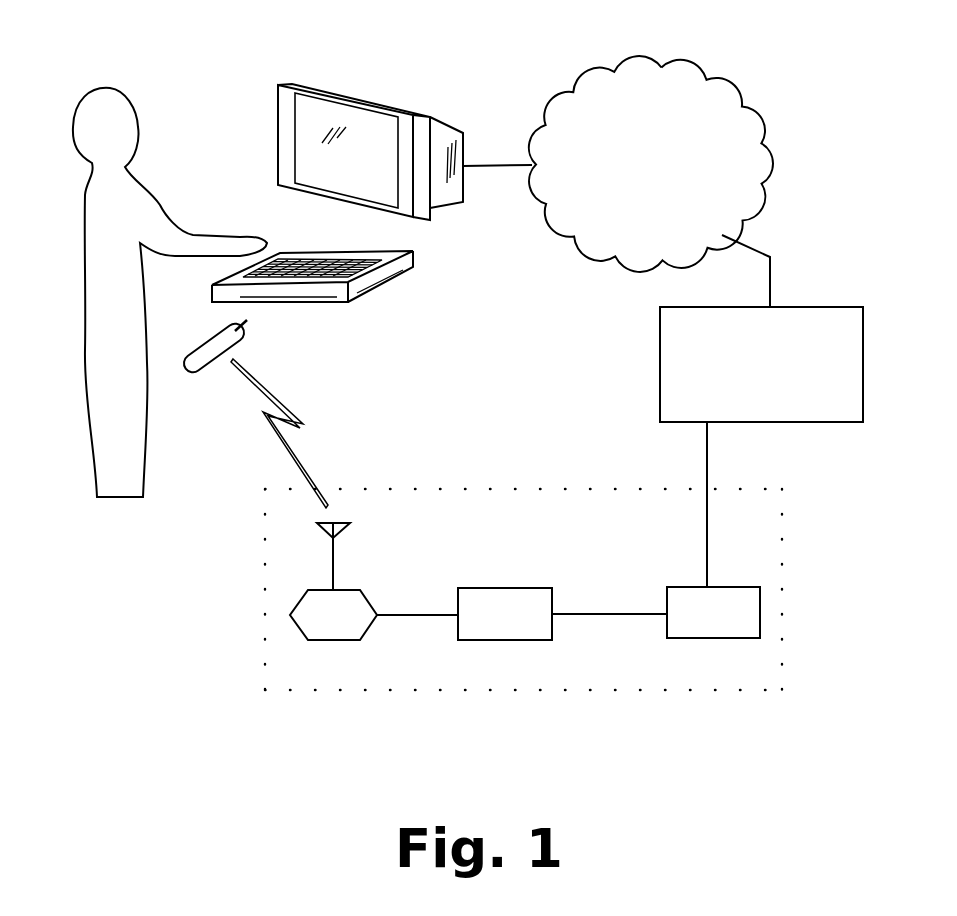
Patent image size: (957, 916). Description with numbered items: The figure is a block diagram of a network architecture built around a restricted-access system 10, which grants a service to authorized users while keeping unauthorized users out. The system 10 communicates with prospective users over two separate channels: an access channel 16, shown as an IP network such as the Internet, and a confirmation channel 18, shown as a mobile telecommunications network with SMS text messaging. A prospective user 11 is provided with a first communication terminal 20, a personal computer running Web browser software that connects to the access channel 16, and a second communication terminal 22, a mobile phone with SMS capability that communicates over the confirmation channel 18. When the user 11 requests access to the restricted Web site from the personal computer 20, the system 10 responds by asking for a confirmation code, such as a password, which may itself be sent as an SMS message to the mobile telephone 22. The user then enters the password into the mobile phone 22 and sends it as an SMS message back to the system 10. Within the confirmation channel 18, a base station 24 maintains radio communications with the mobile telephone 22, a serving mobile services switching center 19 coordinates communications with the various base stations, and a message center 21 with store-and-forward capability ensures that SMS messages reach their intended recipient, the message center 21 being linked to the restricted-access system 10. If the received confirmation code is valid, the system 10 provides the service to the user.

The prospective user 11 is at (110, 88).
The first communication terminal 20 is at (330, 93).
The access channel 16 is at (702, 82).
The restricted-access system 10 is at (660, 340).
The second communication terminal 22 is at (183, 370).
The confirmation channel 18 is at (468, 488).
The base station 24 is at (300, 602).
The serving mobile services switching center 19 is at (500, 588).
The message center 21 is at (760, 600).